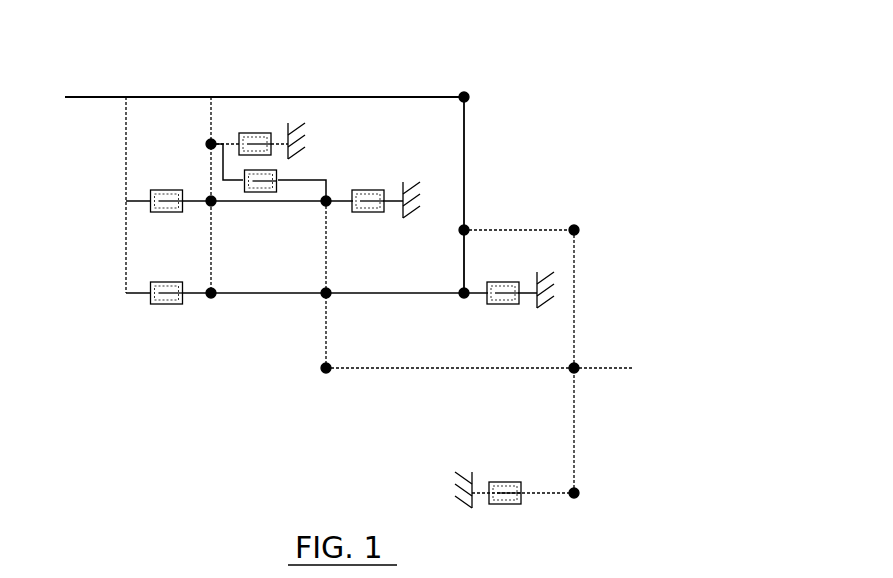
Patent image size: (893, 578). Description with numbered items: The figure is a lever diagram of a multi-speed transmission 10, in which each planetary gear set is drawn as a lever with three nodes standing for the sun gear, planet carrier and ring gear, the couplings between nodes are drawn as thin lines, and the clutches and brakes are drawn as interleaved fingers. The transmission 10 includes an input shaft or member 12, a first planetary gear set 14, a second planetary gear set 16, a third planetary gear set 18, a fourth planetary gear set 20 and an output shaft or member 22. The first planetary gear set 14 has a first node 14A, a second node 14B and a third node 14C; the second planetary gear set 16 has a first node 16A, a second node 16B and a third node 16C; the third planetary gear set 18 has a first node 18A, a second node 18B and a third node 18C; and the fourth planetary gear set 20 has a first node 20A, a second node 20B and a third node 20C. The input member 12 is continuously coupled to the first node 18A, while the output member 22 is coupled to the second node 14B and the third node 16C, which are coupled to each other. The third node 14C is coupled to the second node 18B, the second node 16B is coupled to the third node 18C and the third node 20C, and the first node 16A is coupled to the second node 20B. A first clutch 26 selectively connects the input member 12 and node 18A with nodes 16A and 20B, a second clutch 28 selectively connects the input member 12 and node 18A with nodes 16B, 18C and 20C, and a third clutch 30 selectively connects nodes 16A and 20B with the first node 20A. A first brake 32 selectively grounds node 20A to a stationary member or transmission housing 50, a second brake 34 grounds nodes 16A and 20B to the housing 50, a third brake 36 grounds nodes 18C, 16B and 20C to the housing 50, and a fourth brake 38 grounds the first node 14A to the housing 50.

The multi-speed transmission 10 is at (640, 96).
The input shaft or member 12 is at (73, 98).
The first planetary gear set 14 is at (610, 294).
The first node of first planetary gear set 14A is at (579, 492).
The second node of first planetary gear set 14B is at (571, 372).
The third node of first planetary gear set 14C is at (574, 226).
The second planetary gear set 16 is at (339, 182).
The first node of second planetary gear set 16A is at (323, 205).
The second node of second planetary gear set 16B is at (323, 290).
The third node of second planetary gear set 16C is at (328, 374).
The third planetary gear set 18 is at (440, 75).
The first node of third planetary gear set 18A is at (465, 92).
The second node of third planetary gear set 18B is at (460, 232).
The third node of third planetary gear set 18C is at (460, 297).
The fourth planetary gear set 20 is at (208, 128).
The first node of fourth planetary gear set 20A is at (207, 142).
The second node of fourth planetary gear set 20B is at (208, 205).
The third node of fourth planetary gear set 20C is at (214, 297).
The output shaft or member 22 is at (616, 372).
The first clutch 26 is at (158, 189).
The second clutch 28 is at (158, 304).
The third clutch 30 is at (243, 193).
The first brake 32 is at (251, 133).
The second brake 34 is at (370, 189).
The third brake 36 is at (503, 304).
The fourth brake 38 is at (510, 482).
The stationary member or transmission housing 50 is at (297, 124).